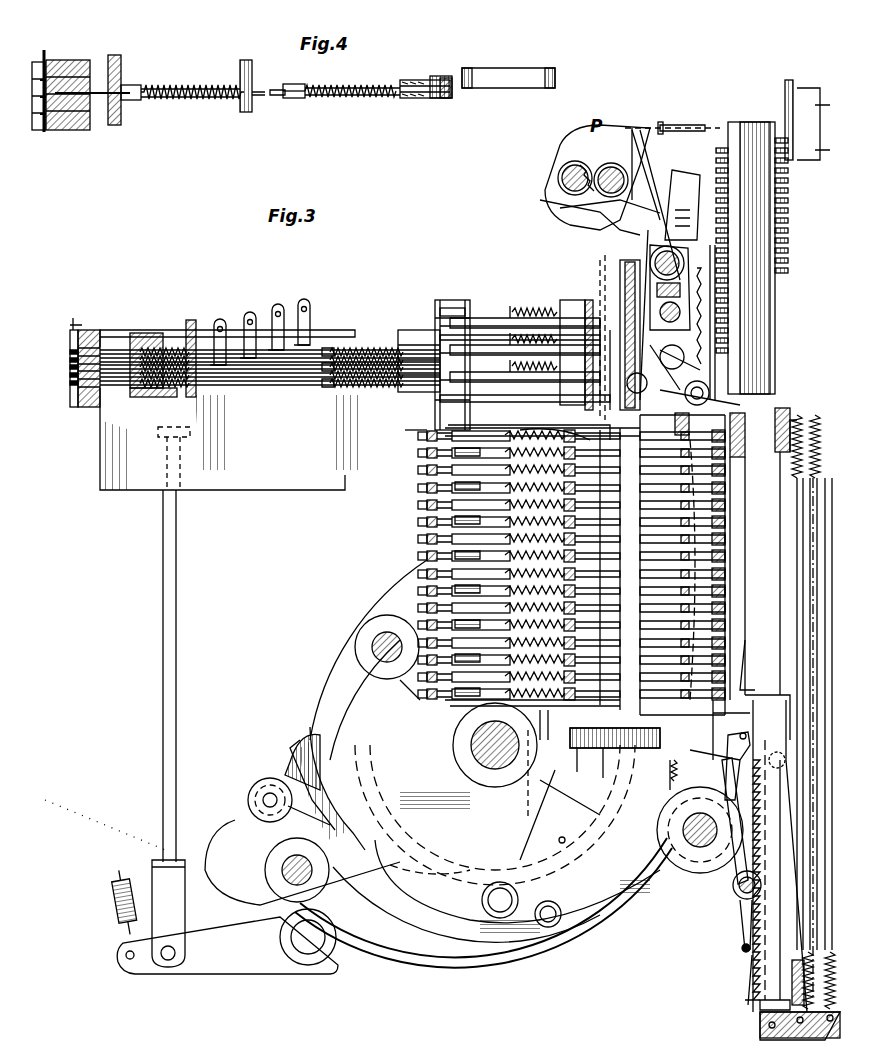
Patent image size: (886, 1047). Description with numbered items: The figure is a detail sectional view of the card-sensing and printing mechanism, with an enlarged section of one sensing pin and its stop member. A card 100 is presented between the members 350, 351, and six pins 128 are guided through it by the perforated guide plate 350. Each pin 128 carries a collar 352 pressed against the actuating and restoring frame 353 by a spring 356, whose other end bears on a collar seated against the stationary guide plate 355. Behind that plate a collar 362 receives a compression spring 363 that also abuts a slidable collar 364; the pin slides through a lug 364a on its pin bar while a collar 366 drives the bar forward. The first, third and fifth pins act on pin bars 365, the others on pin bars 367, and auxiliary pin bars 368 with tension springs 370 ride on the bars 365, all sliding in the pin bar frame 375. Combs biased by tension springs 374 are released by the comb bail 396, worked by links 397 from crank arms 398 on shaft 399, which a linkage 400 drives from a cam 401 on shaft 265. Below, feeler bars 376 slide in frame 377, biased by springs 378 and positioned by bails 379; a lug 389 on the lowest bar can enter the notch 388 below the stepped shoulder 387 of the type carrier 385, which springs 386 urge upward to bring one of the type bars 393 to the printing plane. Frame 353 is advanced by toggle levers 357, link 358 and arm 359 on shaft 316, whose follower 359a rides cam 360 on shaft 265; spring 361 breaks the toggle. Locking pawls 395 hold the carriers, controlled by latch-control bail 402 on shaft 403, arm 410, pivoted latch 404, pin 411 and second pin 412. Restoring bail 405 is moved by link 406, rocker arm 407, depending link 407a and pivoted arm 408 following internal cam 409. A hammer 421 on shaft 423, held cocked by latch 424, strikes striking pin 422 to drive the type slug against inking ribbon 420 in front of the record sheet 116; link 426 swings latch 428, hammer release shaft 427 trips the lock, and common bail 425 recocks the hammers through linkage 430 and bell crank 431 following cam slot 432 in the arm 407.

In FIG. 4, the card 100 is at (60, 128).
In FIG. 3, the card 100 is at (78, 405).
In FIG. 3, the record-receiving card or sheet 116 is at (788, 188).
In FIG. 4, the pins 128 is at (275, 93).
In FIG. 3, the pins 128 is at (275, 365).
In FIG. 3, the shaft 265 is at (495, 760).
In FIG. 3, the shaft 316 is at (315, 950).
In FIG. 4, the perforated guide plate 350 is at (60, 65).
In FIG. 3, the perforated guide plate 350 is at (85, 420).
In FIG. 4, the member 351 is at (40, 130).
In FIG. 3, the member 351 is at (75, 330).
In FIG. 4, the collars 352 is at (140, 100).
In FIG. 4, the actuating and restoring frame 353 is at (122, 70).
In FIG. 3, the actuating and restoring frame 353 is at (148, 396).
In FIG. 4, the stationary guide plate 355 is at (245, 112).
In FIG. 4, the springs 356 is at (180, 88).
In FIG. 3, the springs 356 is at (168, 335).
In FIG. 3, the toggle levers 357 is at (140, 330).
In FIG. 3, the link 358 is at (176, 605).
In FIG. 3, the arm 359 is at (215, 968).
In FIG. 3, the follower 359a is at (225, 810).
In FIG. 3, the cam 360 is at (300, 735).
In FIG. 3, the spring 361 is at (115, 905).
In FIG. 4, the collar 362 is at (300, 96).
In FIG. 3, the collar 362 is at (345, 380).
In FIG. 4, the compression spring 363 is at (370, 92).
In FIG. 4, the slidable collar 364 is at (418, 94).
In FIG. 3, the slidable collar 364 is at (388, 335).
In FIG. 4, the lug 364a is at (430, 78).
In FIG. 4, the pin bars 365 is at (505, 74).
In FIG. 3, the pin bars 365 is at (468, 360).
In FIG. 4, the collar 366 is at (440, 92).
In FIG. 3, the collar 366 is at (422, 320).
In FIG. 3, the pin bars 367 is at (450, 350).
In FIG. 3, the auxiliary pin bars 368 is at (580, 300).
In FIG. 3, the tension springs 370 is at (545, 318).
In FIG. 3, the tension springs 374 is at (540, 760).
In FIG. 3, the pin bar frame 375 is at (455, 300).
In FIG. 3, the feeler bars 376 is at (450, 722).
In FIG. 3, the frame 377 is at (422, 440).
In FIG. 3, the springs 378 is at (540, 735).
In FIG. 3, the bails 379 is at (480, 430).
In FIG. 3, the type carrier 385 is at (765, 500).
In FIG. 3, the tension springs 386 is at (745, 720).
In FIG. 3, the stepped shoulder 387 is at (750, 640).
In FIG. 3, the lower notch 388 is at (745, 670).
In FIG. 3, the lug 389 is at (575, 770).
In FIG. 3, the type bars 393 is at (780, 250).
In FIG. 3, the locking pawls 395 is at (745, 740).
In FIG. 3, the comb bail 396 is at (555, 225).
In FIG. 3, the links 397 is at (700, 322).
In FIG. 3, the crank arms 398 is at (660, 400).
In FIG. 3, the shaft 399 is at (705, 400).
In FIG. 3, the linkage 400 is at (595, 680).
In FIG. 3, the cam 401 is at (428, 575).
In FIG. 3, the latch-control bail 402 is at (735, 850).
In FIG. 3, the shaft 403 is at (740, 900).
In FIG. 3, the pivoted latch 404 is at (672, 835).
In FIG. 3, the restoring bail 405 is at (785, 962).
In FIG. 3, the link 406 is at (755, 955).
In FIG. 3, the rocker arm 407 is at (580, 770).
In FIG. 3, the depending link 407a is at (560, 842).
In FIG. 3, the pivoted arm 408 is at (470, 908).
In FIG. 3, the internal cam 409 is at (290, 762).
In FIG. 3, the arm 410 is at (700, 890).
In FIG. 3, the pin 411 is at (700, 760).
In FIG. 3, the second pin 412 is at (770, 1020).
In FIG. 3, the inking ribbon 420 is at (785, 110).
In FIG. 3, the hammer 421 is at (625, 130).
In FIG. 3, the striking pin 422 is at (695, 122).
In FIG. 3, the shaft 423 is at (650, 262).
In FIG. 3, the latch 424 is at (560, 142).
In FIG. 3, the common bail 425 is at (685, 172).
In FIG. 3, the link 426 is at (712, 295).
In FIG. 3, the hammer release shaft 427 is at (620, 200).
In FIG. 3, the latch 428 is at (640, 300).
In FIG. 3, the linkage 430 is at (620, 262).
In FIG. 3, the bell crank 431 is at (520, 440).
In FIG. 3, the cam slot 432 is at (720, 570).